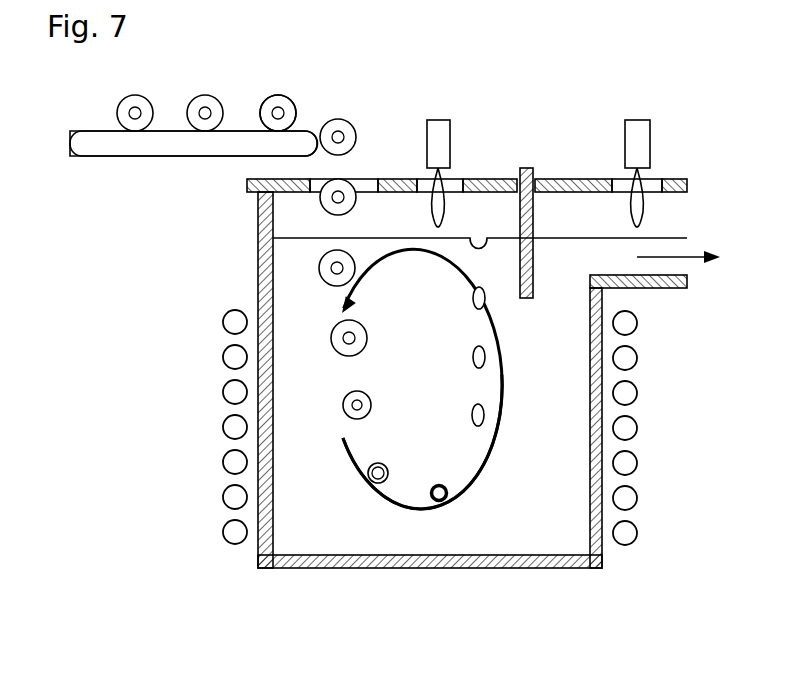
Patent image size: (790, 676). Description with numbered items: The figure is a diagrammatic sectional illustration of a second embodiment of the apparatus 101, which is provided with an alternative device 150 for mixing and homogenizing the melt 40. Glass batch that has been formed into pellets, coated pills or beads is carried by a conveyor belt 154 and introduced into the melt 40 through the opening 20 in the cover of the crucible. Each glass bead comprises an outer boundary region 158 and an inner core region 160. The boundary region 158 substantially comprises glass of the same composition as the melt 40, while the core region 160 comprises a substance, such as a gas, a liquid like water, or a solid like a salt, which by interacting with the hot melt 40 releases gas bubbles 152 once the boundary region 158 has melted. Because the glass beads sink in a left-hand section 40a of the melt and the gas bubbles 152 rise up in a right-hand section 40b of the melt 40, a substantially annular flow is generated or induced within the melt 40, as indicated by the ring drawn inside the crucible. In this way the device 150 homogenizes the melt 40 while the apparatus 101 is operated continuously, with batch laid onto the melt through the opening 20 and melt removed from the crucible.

The apparatus 101 is at (488, 98).
The opening 20 is at (360, 178).
The melt 40 is at (460, 522).
The left-hand section of the melt 40a is at (363, 443).
The right-hand section of the melt 40b is at (473, 443).
The device for mixing and homogenizing the melt 150 is at (197, 182).
The gas bubbles 152 is at (470, 415).
The conveyor belt 154 is at (138, 156).
The boundary region 158 is at (287, 103).
The core region 160 is at (340, 133).